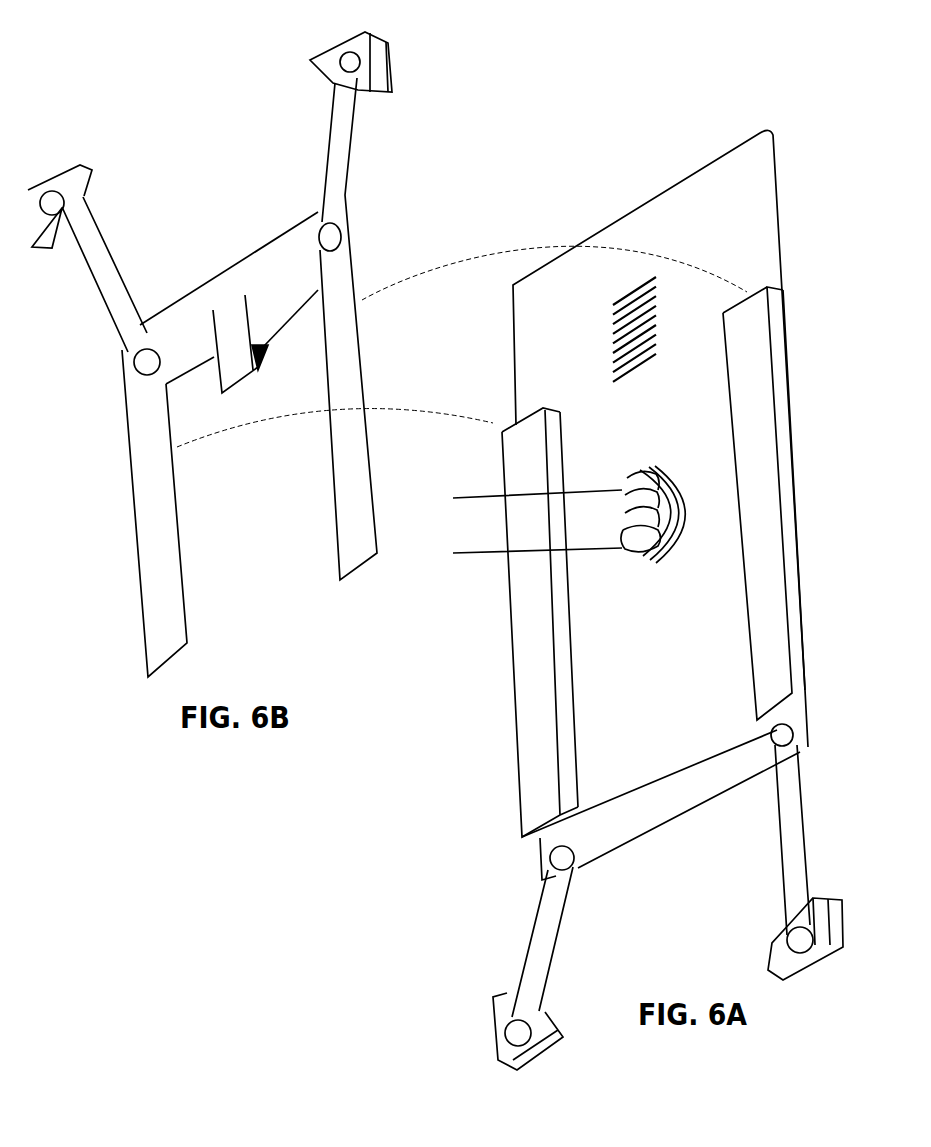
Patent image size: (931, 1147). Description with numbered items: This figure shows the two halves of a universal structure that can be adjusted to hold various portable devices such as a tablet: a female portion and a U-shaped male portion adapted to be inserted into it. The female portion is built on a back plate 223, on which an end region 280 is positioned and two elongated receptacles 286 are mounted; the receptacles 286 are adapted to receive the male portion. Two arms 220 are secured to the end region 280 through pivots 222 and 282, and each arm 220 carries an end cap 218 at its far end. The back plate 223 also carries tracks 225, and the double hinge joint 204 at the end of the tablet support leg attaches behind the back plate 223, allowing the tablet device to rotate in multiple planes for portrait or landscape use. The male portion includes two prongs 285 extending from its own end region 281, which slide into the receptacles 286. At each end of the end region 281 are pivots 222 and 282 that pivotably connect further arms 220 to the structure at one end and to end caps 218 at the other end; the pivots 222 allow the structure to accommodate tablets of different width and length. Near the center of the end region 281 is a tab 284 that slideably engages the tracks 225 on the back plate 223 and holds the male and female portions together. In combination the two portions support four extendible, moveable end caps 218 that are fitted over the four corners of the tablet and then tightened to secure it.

In FIG. 6A, the double hinge joint 204 is at (569, 512).
In FIG. 6B, the end cap 218 is at (210, 140).
In FIG. 6A, the end cap 218 is at (668, 984).
In FIG. 6B, the arm 220 is at (224, 215).
In FIG. 6A, the arm 220 is at (673, 881).
In FIG. 6B, the pivot 222 is at (341, 236).
In FIG. 6A, the pivot 222 is at (792, 732).
In FIG. 6A, the back plate 223 is at (731, 236).
In FIG. 6A, the track 225 is at (613, 329).
In FIG. 6A, the end region 280 is at (670, 816).
In FIG. 6B, the end region 281 is at (229, 298).
In FIG. 6B, the pivot 282 is at (360, 62).
In FIG. 6A, the pivot 282 is at (805, 938).
In FIG. 6B, the tab 284 is at (240, 353).
In FIG. 6B, the prong 285 is at (253, 436).
In FIG. 6A, the elongated receptacle 286 is at (653, 562).